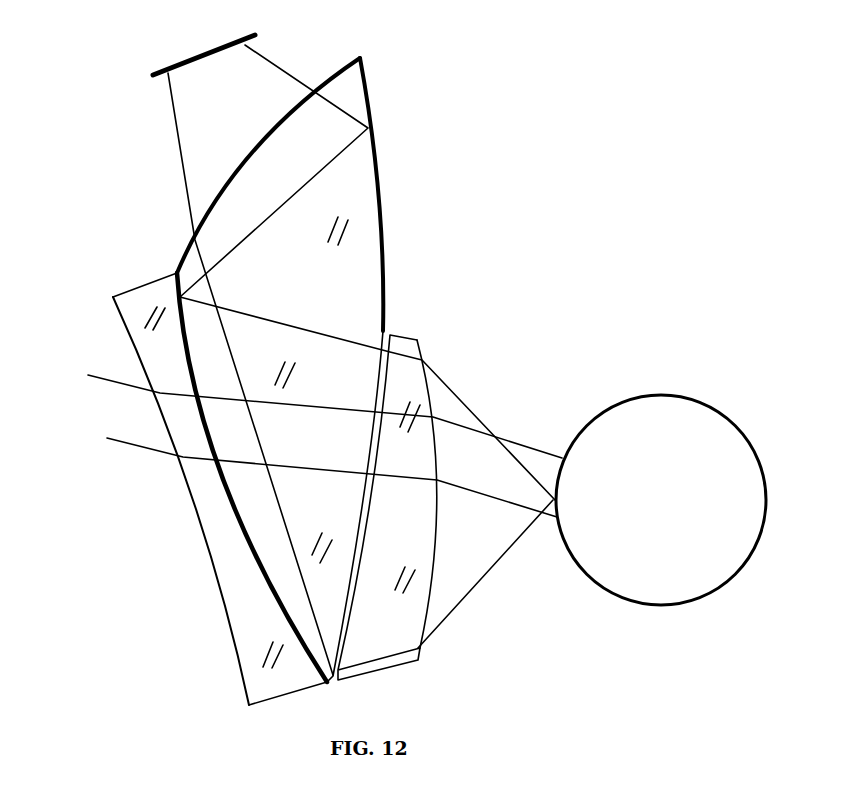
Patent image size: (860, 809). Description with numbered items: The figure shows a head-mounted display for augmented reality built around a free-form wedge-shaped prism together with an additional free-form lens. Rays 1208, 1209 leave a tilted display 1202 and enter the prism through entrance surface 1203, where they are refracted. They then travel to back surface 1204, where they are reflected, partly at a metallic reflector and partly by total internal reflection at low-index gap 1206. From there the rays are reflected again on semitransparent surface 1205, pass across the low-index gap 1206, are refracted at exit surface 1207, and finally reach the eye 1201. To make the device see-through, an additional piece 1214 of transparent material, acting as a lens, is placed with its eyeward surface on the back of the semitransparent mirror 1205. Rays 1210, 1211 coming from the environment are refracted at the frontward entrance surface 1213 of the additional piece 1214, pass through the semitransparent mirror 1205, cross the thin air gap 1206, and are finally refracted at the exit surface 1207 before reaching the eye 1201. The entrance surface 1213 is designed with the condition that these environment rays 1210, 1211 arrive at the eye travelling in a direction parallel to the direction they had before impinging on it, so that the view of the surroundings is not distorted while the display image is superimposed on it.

The eye 1201 is at (662, 395).
The tilted display 1202 is at (177, 65).
The entrance surface 1203 is at (277, 360).
The back surface 1204 is at (387, 200).
The semitransparent surface 1205 is at (183, 255).
The low-index gap 1206 is at (424, 485).
The exit surface 1207 is at (437, 525).
The ray 1208 is at (310, 78).
The ray 1209 is at (173, 138).
The ray coming from the environment 1210 is at (98, 370).
The ray coming from the environment 1211 is at (107, 442).
The entrance surface of additional piece 1213 is at (206, 549).
The additional piece of transparent material 1214 is at (220, 489).